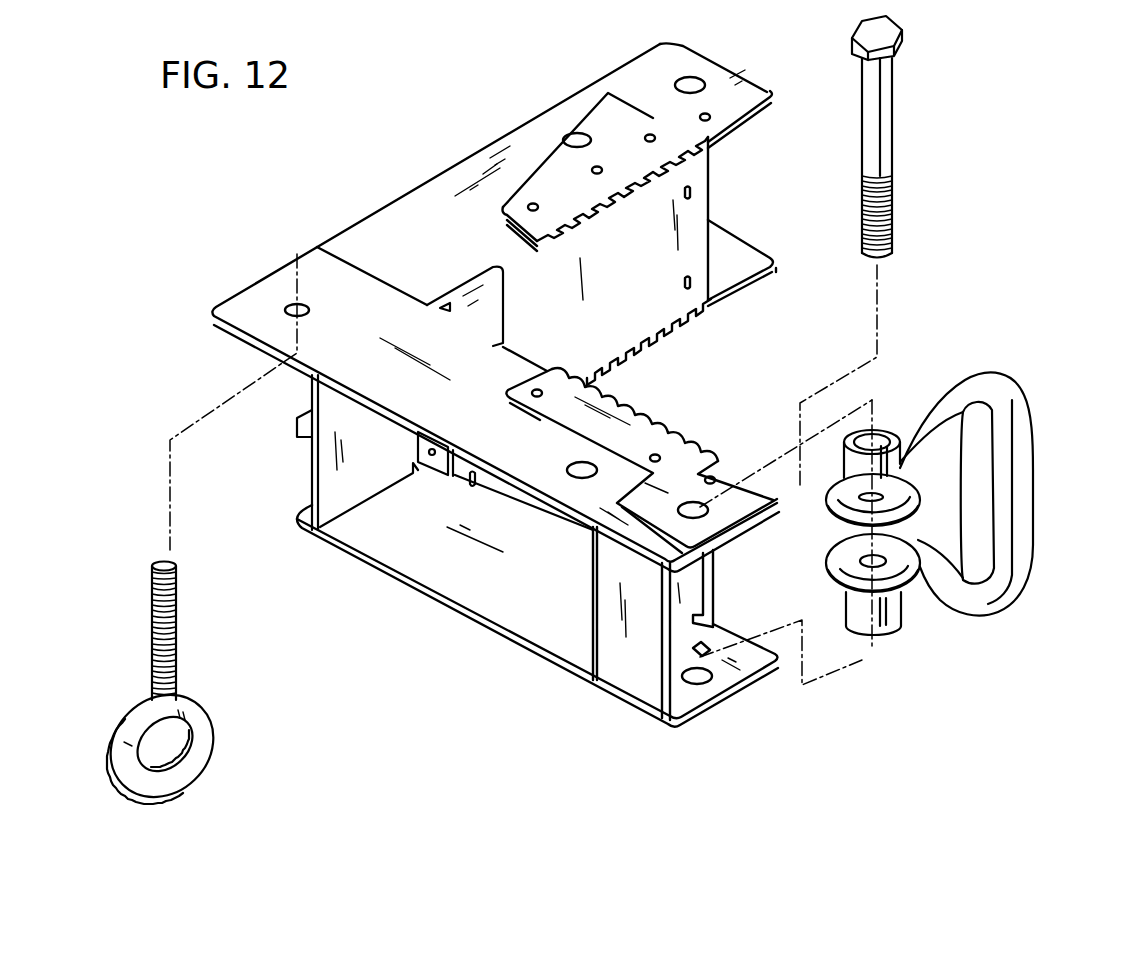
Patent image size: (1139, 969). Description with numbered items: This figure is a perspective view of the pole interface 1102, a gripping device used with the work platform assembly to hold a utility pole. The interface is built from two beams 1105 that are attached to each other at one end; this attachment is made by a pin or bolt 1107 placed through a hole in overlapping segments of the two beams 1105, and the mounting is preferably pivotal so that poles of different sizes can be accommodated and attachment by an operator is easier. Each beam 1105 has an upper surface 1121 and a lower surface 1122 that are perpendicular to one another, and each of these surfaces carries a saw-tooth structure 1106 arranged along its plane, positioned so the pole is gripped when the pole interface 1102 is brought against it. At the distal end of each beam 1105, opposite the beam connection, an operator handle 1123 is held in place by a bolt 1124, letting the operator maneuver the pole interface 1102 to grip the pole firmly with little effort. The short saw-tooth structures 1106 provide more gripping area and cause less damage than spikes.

The pole interface 1102 is at (523, 539).
The beam 1105 is at (690, 227).
The saw-tooth structure 1106 is at (740, 97).
The pin or bolt 1107 is at (177, 648).
The upper surface 1121 is at (433, 178).
The lower surface 1122 is at (408, 587).
The operator handle 1123 is at (1030, 425).
The bolt 1124 is at (883, 122).